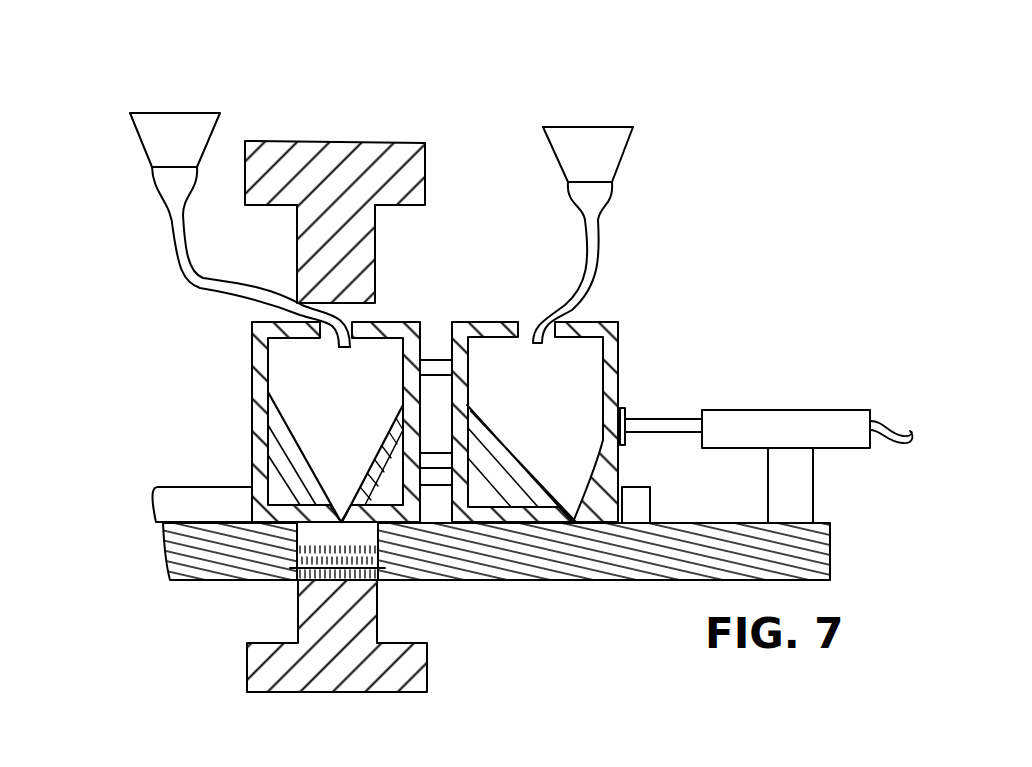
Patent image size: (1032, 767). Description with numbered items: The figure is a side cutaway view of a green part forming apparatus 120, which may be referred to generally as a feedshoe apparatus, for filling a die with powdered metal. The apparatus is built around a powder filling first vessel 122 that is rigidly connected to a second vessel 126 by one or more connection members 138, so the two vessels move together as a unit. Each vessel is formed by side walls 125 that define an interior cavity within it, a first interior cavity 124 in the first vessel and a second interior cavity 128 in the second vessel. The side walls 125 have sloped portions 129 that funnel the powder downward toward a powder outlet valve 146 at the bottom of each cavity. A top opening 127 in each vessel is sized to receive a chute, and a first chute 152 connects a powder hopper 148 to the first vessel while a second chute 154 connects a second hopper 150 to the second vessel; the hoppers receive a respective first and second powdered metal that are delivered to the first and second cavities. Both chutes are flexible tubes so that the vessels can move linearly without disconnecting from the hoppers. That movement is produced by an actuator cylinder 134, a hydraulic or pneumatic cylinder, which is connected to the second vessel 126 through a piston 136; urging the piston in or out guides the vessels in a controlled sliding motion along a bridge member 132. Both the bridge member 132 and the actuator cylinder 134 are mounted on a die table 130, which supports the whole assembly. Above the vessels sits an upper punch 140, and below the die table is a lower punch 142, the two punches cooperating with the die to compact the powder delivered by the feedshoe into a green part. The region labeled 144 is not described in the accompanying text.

The green part forming apparatus 120 is at (446, 369).
The first vessel 122 is at (422, 343).
The first interior cavity 124 is at (292, 392).
The side walls 125 is at (256, 345).
The second vessel 126 is at (623, 340).
The top opening 127 is at (527, 330).
The second interior cavity 128 is at (579, 438).
The sloped portions 129 is at (545, 372).
The die table 130 is at (828, 523).
The bridge member 132 is at (643, 501).
The actuator cylinder 134 is at (805, 422).
The piston 136 is at (675, 420).
The connection members 138 is at (442, 358).
The upper punch 140 is at (375, 213).
The lower punch 142 is at (430, 667).
The porous element 144 is at (380, 573).
The powder outlet valve 146 is at (295, 538).
The powder hopper 148 is at (173, 128).
The second hopper 150 is at (612, 147).
The first chute 152 is at (167, 182).
The second chute 154 is at (592, 198).